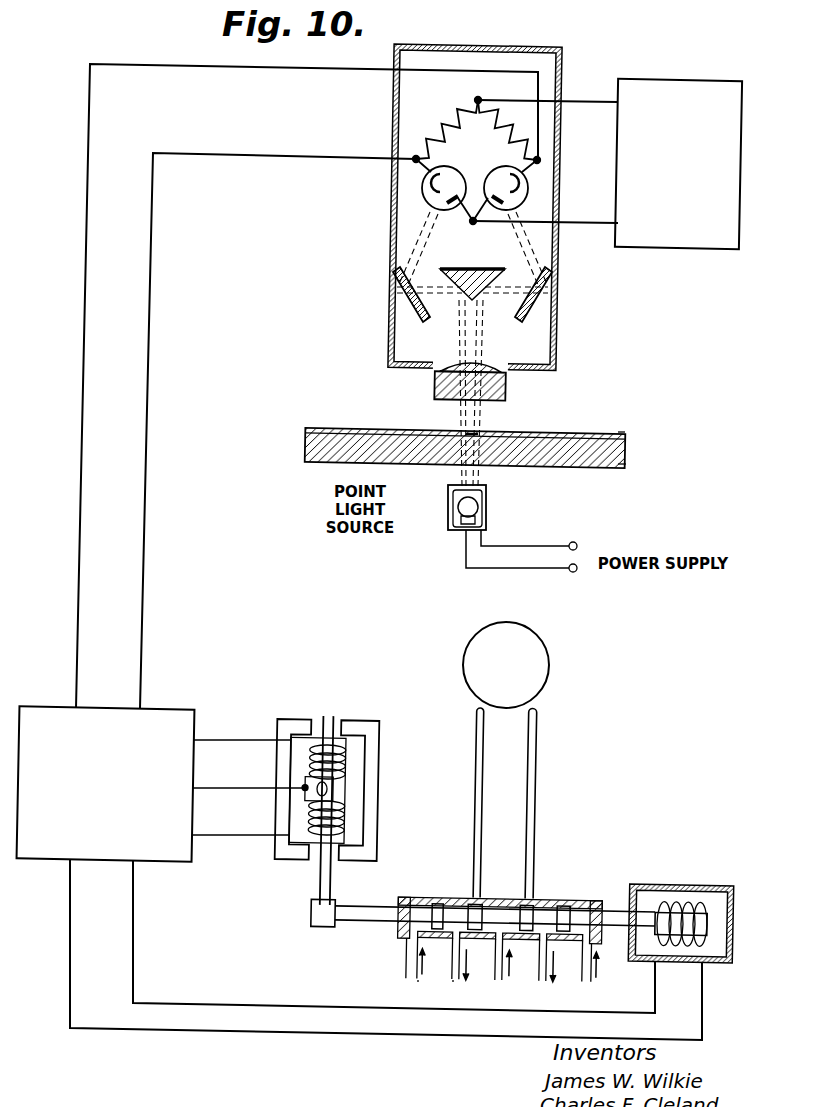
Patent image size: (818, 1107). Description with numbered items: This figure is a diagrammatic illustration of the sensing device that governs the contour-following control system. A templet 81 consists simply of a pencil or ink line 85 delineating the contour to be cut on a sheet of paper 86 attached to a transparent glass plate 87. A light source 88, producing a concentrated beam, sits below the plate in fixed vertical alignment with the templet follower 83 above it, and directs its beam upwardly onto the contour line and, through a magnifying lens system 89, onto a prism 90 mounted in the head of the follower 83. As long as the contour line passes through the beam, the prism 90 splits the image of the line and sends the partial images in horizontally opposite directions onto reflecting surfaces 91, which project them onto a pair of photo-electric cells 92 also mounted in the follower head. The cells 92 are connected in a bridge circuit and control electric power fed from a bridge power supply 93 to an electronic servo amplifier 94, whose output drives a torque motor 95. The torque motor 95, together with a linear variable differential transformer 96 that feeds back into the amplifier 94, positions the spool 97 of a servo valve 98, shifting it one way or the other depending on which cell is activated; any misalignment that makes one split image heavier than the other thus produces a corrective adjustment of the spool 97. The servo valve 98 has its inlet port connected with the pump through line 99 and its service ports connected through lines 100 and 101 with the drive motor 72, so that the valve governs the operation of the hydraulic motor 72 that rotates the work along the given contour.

The drive motor 72 is at (541, 656).
The templet 81 is at (571, 433).
The templet follower 83 is at (584, 358).
The pencil or ink line 85 is at (472, 432).
The sheet of paper 86 is at (623, 435).
The transparent glass plate 87 is at (629, 458).
The light source 88 is at (494, 511).
The magnifying lens system 89 is at (428, 381).
The prism 90 is at (470, 268).
The reflecting surfaces 91 is at (425, 321).
The photo-electric cells 92 is at (497, 171).
The bridge power supply 93 is at (672, 80).
The electronic servo amplifier 94 is at (155, 722).
The torque motor 95 is at (370, 727).
The linear variable differential transformer 96 is at (716, 964).
The spool 97 is at (493, 911).
The servo valve 98 is at (483, 919).
The line 99 is at (498, 960).
The line 100 is at (477, 801).
The line 101 is at (532, 801).